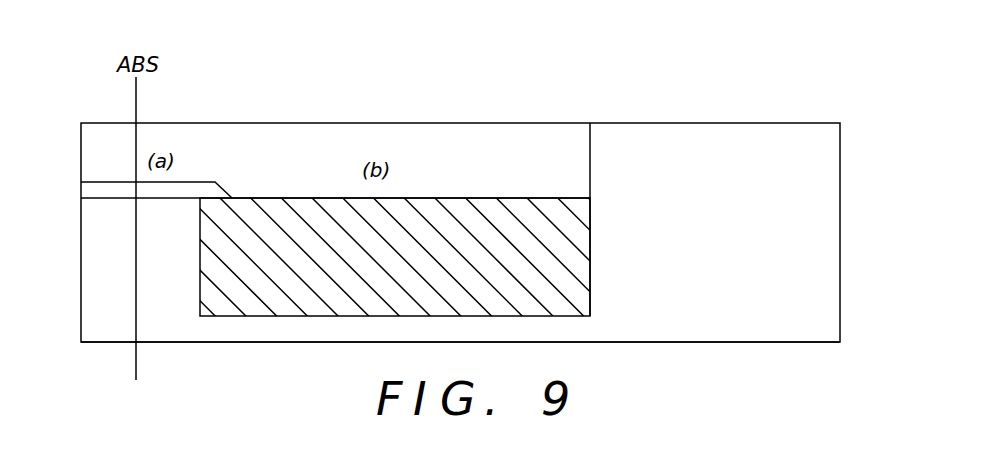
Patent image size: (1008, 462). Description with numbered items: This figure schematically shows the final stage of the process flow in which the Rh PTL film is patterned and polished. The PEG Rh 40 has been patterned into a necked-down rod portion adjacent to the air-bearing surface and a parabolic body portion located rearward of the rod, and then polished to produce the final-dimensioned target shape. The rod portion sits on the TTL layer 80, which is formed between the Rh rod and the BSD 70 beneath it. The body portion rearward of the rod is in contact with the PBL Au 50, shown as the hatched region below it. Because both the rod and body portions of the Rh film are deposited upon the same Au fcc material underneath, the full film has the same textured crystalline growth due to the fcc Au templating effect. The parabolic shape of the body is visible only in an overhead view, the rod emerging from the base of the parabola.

The PEG Rh 40 is at (92, 135).
The TTL layer 80 is at (92, 190).
The PBL Au 50 is at (555, 240).
The BSD 70 is at (92, 317).